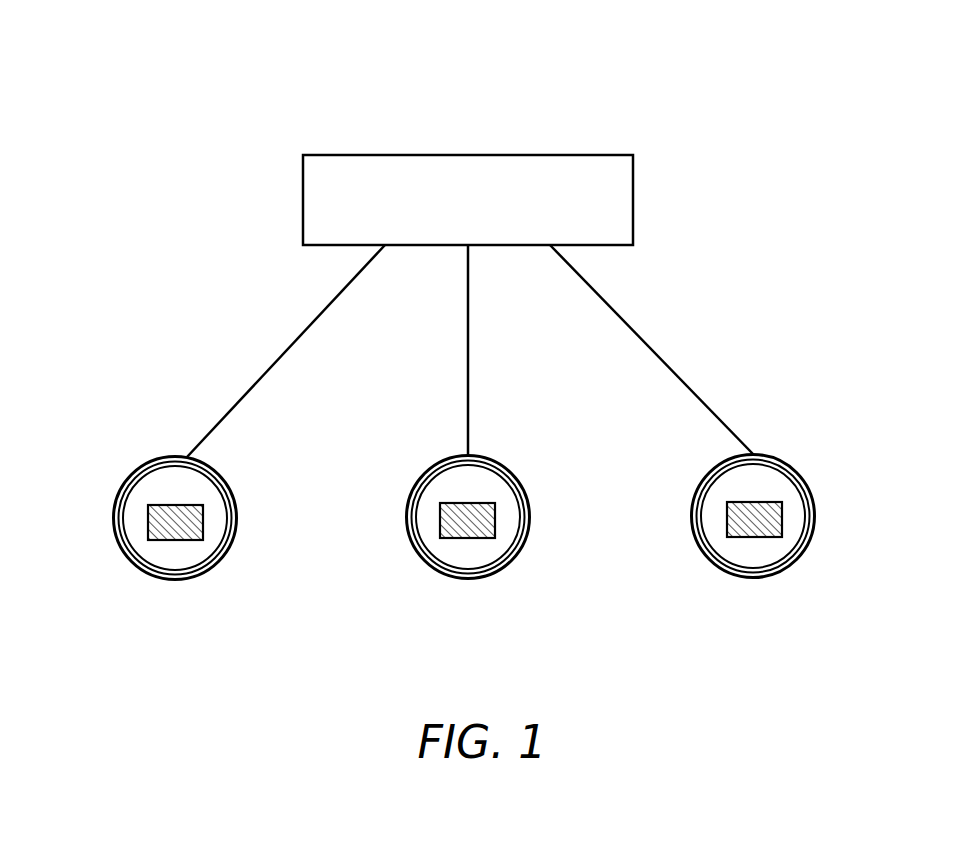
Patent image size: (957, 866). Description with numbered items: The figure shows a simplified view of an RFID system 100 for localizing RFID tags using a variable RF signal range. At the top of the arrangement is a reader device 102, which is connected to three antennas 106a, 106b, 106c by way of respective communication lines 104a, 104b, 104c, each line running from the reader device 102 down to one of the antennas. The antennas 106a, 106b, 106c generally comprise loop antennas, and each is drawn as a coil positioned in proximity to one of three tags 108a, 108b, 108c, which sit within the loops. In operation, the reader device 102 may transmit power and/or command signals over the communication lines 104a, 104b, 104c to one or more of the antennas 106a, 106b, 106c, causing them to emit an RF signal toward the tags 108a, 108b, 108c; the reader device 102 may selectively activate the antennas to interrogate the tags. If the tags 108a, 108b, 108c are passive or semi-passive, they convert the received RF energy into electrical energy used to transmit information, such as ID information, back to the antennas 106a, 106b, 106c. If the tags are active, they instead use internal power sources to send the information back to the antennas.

The RFID system 100 is at (555, 62).
The reader device 102 is at (447, 226).
The communication line 104a is at (313, 322).
The communication line 104b is at (468, 325).
The communication line 104c is at (627, 322).
The antenna 106a is at (137, 470).
The antenna 106b is at (435, 465).
The antenna 106c is at (775, 453).
The tag 108a is at (175, 540).
The tag 108b is at (470, 538).
The tag 108c is at (752, 538).